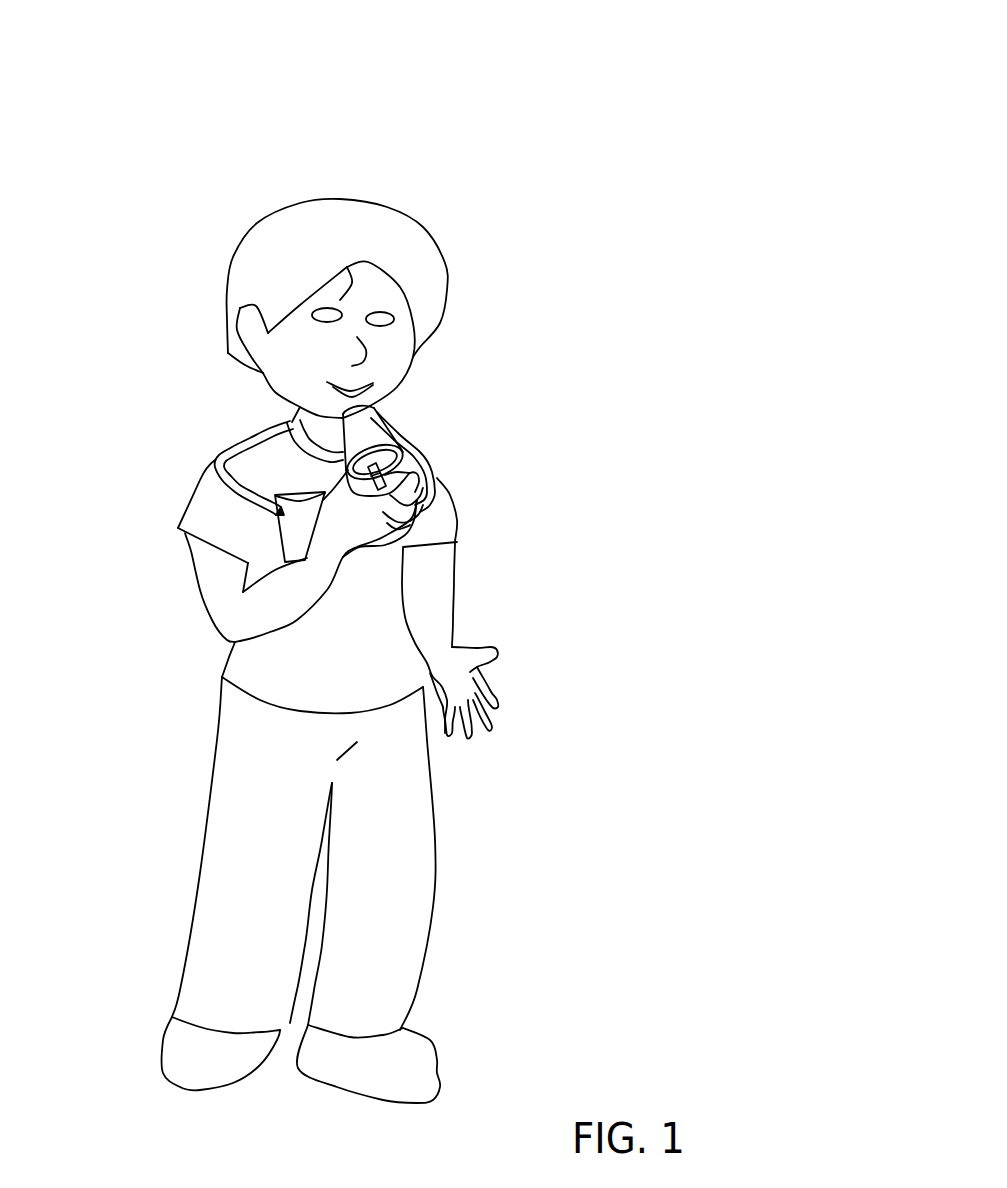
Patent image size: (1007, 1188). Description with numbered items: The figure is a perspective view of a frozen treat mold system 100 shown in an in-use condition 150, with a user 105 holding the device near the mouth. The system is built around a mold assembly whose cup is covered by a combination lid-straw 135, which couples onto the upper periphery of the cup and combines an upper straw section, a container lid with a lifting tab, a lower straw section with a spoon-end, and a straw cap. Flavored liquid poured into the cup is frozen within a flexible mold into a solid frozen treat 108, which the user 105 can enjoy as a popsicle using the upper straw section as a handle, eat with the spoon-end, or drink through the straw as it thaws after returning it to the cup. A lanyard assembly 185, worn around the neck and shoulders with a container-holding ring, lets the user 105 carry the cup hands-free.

The frozen treat mold system 100 is at (548, 97).
The in-use condition 150 is at (587, 140).
The user 105 is at (452, 297).
The frozen treat 108 is at (380, 407).
The combination lid-straw 135 is at (407, 447).
The lanyard assembly 185 is at (443, 482).